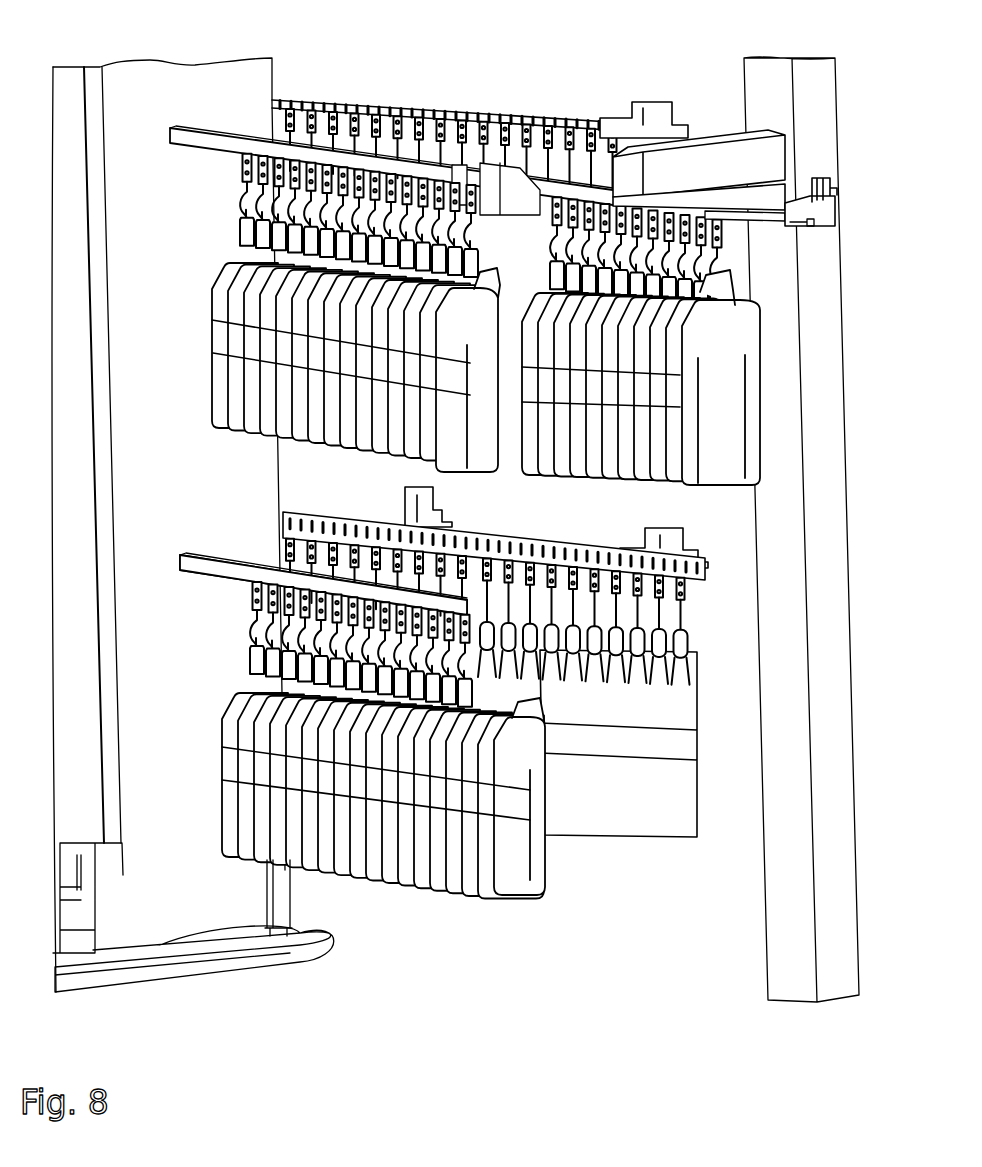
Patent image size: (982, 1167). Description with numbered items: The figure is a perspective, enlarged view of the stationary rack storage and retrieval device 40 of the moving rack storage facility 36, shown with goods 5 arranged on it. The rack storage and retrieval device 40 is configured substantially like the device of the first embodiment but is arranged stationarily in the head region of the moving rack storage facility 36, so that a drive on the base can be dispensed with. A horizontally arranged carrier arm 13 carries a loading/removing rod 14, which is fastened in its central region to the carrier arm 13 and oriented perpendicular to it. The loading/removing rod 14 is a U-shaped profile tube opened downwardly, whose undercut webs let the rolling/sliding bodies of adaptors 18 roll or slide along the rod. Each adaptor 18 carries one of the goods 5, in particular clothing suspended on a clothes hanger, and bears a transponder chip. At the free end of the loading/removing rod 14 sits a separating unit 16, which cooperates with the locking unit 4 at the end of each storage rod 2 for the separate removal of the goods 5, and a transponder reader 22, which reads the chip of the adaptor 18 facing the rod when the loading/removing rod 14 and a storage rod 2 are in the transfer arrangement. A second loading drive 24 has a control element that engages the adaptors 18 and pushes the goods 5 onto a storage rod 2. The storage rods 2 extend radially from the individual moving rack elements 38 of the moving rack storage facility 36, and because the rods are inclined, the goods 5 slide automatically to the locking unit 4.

The storage rod 2 is at (233, 143).
The locking unit 4 is at (658, 110).
The goods 5 is at (474, 880).
The carrier arm 13 is at (717, 150).
The loading/removing rod 14 is at (760, 202).
The separating unit 16 is at (838, 192).
The adaptor 18 is at (683, 578).
The transponder reader 22 is at (812, 229).
The second loading drive 24 is at (757, 216).
The moving rack storage facility 36 is at (247, 983).
The individual moving rack element 38 is at (178, 932).
The stationary rack storage and retrieval device 40 is at (791, 1003).